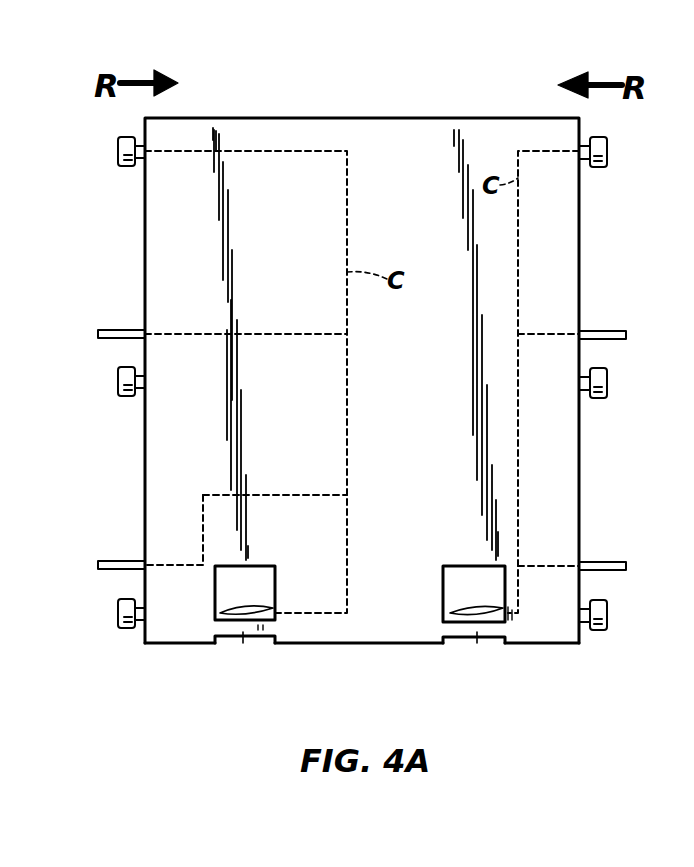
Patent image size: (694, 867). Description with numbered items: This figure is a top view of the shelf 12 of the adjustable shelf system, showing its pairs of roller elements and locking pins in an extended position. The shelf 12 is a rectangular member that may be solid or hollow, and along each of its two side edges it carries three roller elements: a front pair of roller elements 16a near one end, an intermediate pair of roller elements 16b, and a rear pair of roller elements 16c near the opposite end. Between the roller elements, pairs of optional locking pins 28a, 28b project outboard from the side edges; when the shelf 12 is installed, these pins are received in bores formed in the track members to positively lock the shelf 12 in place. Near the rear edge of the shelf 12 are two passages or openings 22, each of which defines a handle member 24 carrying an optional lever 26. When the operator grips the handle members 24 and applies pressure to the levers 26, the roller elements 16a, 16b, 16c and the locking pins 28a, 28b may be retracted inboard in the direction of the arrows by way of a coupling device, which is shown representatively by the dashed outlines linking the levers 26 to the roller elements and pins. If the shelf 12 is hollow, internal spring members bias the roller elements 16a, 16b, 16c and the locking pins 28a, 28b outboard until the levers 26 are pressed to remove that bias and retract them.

The shelf 12 is at (251, 110).
The front pair of roller elements 16a is at (118, 152).
The intermediate pair of roller elements 16b is at (118, 382).
The rear pair of roller elements 16c is at (118, 614).
The locking pin 28a is at (117, 330).
The locking pin 28b is at (117, 561).
The opening 22 is at (256, 578).
The handle member 24 is at (243, 640).
The lever 26 is at (256, 609).